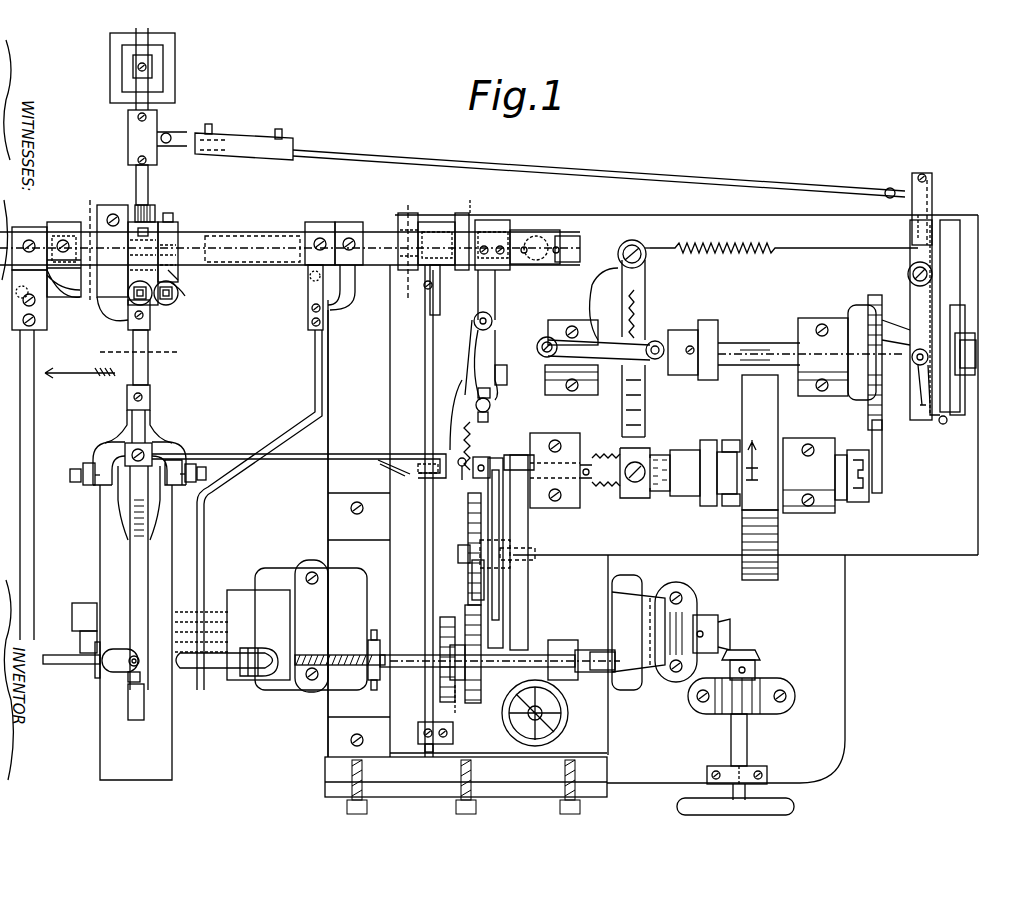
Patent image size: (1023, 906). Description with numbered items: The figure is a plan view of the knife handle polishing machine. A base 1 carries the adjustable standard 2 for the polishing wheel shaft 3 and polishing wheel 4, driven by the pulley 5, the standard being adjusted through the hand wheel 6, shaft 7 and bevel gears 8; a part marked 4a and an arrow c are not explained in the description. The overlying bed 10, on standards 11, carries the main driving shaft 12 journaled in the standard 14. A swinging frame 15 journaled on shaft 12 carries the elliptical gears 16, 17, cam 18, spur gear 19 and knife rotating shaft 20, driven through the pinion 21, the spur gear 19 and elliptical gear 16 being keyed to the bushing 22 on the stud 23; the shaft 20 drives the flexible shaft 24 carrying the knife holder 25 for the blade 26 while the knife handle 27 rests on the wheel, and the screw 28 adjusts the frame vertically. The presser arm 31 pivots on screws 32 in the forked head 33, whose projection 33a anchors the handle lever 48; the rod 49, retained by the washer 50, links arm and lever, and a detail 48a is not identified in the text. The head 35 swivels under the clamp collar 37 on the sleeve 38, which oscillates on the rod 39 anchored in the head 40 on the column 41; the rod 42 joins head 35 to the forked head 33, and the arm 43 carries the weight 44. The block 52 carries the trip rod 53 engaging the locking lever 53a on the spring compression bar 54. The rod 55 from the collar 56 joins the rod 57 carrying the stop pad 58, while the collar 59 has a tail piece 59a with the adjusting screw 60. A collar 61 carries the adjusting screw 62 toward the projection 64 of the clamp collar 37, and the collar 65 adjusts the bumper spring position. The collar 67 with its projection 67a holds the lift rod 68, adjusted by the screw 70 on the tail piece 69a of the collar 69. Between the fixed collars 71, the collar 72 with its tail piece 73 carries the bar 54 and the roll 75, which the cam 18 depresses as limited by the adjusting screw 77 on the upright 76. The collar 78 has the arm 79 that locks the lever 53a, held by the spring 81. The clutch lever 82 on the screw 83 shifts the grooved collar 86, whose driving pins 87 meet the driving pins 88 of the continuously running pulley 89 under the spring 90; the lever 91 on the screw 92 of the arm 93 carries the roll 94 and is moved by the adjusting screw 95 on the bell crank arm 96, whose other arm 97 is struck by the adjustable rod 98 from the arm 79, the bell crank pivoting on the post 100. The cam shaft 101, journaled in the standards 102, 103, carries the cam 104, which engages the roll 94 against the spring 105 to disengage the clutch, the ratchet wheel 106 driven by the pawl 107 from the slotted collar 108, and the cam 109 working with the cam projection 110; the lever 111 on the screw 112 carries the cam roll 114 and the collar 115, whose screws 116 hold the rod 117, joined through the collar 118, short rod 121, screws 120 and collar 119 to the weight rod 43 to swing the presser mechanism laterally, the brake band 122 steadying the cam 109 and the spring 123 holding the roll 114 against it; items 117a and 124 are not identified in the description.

The main frame 1 is at (726, 669).
The bearing bracket 2 is at (460, 626).
The bearing 3 is at (72, 618).
The slide 4 is at (52, 350).
The guide 4a is at (23, 300).
The section line 5 is at (95, 198).
The treadle 6 is at (743, 805).
The treadle rod 7 is at (750, 740).
The pivot bracket 8 is at (411, 201).
The frame casing 10 is at (927, 527).
The section line 11 is at (474, 201).
The spring 12 is at (605, 456).
The bearing block 14 is at (815, 475).
The lever 15 is at (528, 530).
The gear 16 is at (468, 516).
The gear 17 is at (476, 703).
The pinion 18 is at (449, 650).
The lever arm 19 is at (500, 590).
The shaft 20 is at (406, 655).
The bracket 21 is at (500, 455).
The hub 22 is at (472, 585).
The clutch 23 is at (458, 552).
The threaded rod 24 is at (355, 655).
The clevis 25 is at (255, 648).
The link rod 26 is at (225, 670).
The pivot head 27 is at (112, 668).
The hand wheel 28 is at (562, 716).
The yoke 31 is at (118, 524).
The set screw 32 is at (80, 478).
The fork 33 is at (162, 438).
The collar 33a is at (150, 396).
The bearing block 35 is at (132, 205).
The collar 37 is at (152, 205).
The shaft 38 is at (236, 232).
The sleeve 39 is at (270, 232).
The cam 40 is at (538, 230).
The pin 41 is at (552, 235).
The rod 42 is at (148, 372).
The guide bar 43 is at (136, 92).
The guide frame 44 is at (110, 73).
The slide bar 48 is at (128, 555).
The slide bar end 48a is at (130, 720).
The pin 49 is at (130, 668).
The block 50 is at (136, 682).
The collar 52 is at (125, 445).
The rod 53 is at (300, 462).
The rod end 53a is at (410, 480).
The upright 54 is at (425, 604).
The rod 55 is at (22, 355).
The bearing block 56 is at (23, 248).
The rod 57 is at (70, 655).
The washer 58 is at (95, 674).
The bearing block 59 is at (70, 222).
The arm 59a is at (66, 298).
The roller 60 is at (176, 300).
The arm 61 is at (112, 300).
The roller 62 is at (134, 302).
The arm 64 is at (190, 288).
The collar 65 is at (180, 262).
The bearing block 67 is at (316, 222).
The arm 67a is at (308, 284).
The link 68 is at (308, 428).
The bearing block 69 is at (350, 222).
The arm 69a is at (345, 300).
The screw 70 is at (308, 312).
The bearing 71 is at (400, 213).
The cam 72 is at (436, 222).
The rod 73 is at (440, 293).
The pin 75 is at (457, 707).
The block 76 is at (453, 738).
The screw 77 is at (425, 735).
The cam 78 is at (495, 220).
The lever 79 is at (495, 293).
The rod 81 is at (462, 482).
The lever 82 is at (644, 290).
The pivot 83 is at (640, 260).
The clutch 86 is at (693, 473).
The collar 87 is at (725, 440).
The lever 88 is at (737, 440).
The gear 89 is at (778, 562).
The clutch 90 is at (605, 478).
The link 91 is at (599, 352).
The pivot 92 is at (543, 340).
The link 93 is at (606, 300).
The pivot 94 is at (660, 360).
The pin 95 is at (488, 420).
The roller 96 is at (490, 405).
The arm 97 is at (472, 340).
The pivot 98 is at (495, 317).
The block 100 is at (546, 380).
The shaft 101 is at (765, 343).
The block 102 is at (575, 320).
The bearing block 103 is at (837, 352).
The collar 104 is at (690, 330).
The spring 105 is at (640, 325).
The gear 106 is at (876, 295).
The rod 107 is at (882, 440).
The block 108 is at (869, 490).
The collar 109 is at (975, 338).
The pawl 110 is at (900, 330).
The lever 111 is at (932, 300).
The pivot 112 is at (932, 272).
The spring 114 is at (920, 385).
The arm 115 is at (932, 193).
The pivot 116 is at (890, 188).
The rod 117 is at (599, 171).
The rod end 117a is at (915, 210).
The turnbuckle 118 is at (245, 137).
The block 119 is at (128, 135).
The pivot 120 is at (168, 135).
The link 121 is at (178, 147).
The plate 122 is at (962, 320).
The spring 123 is at (785, 250).
The spring 124 is at (481, 446).
The direction arrow c is at (80, 365).